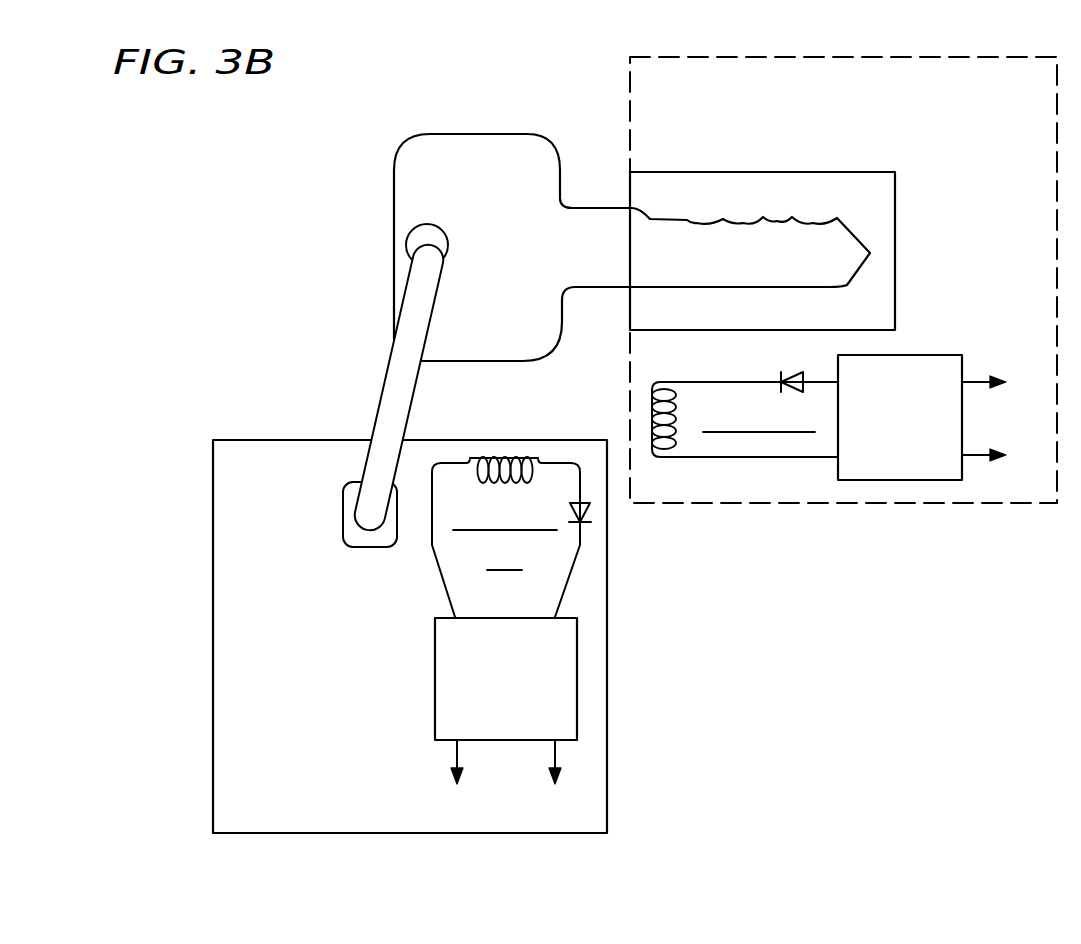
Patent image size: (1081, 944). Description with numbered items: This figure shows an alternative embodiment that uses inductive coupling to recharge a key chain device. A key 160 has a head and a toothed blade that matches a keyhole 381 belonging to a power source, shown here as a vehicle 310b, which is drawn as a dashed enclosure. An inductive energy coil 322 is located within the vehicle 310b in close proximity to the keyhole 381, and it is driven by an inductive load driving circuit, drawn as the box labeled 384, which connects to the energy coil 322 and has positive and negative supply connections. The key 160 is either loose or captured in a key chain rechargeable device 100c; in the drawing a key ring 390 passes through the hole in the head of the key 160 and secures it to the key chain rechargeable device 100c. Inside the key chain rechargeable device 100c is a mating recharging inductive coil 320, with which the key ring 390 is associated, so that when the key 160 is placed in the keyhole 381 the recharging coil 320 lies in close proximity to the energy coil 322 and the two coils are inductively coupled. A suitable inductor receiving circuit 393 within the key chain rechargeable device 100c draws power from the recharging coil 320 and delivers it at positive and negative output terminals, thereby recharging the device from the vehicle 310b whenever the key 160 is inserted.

The key 160 is at (474, 150).
The keyhole 381 is at (770, 172).
The key ring 390 is at (397, 383).
The recharging coil 320 is at (575, 462).
The inductor receiving circuit 393 is at (435, 678).
The key chain rechargeable device 100c is at (607, 703).
The energy coil 322 is at (708, 458).
The vehicle 310b is at (815, 503).
The inductor driving circuit 384 is at (900, 480).